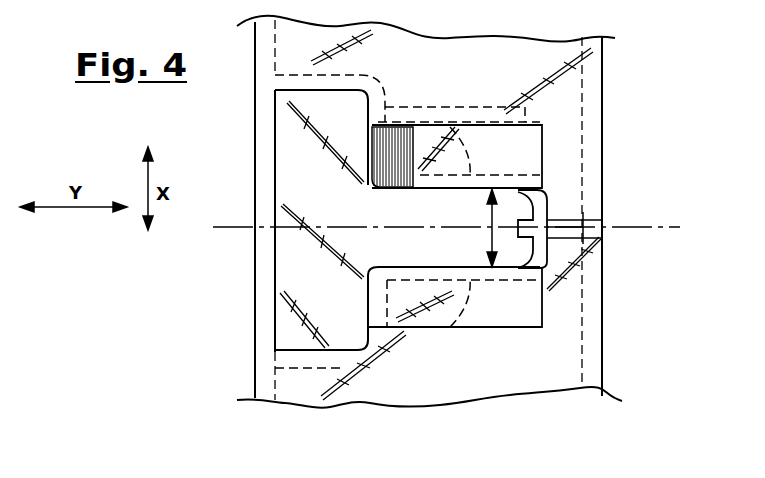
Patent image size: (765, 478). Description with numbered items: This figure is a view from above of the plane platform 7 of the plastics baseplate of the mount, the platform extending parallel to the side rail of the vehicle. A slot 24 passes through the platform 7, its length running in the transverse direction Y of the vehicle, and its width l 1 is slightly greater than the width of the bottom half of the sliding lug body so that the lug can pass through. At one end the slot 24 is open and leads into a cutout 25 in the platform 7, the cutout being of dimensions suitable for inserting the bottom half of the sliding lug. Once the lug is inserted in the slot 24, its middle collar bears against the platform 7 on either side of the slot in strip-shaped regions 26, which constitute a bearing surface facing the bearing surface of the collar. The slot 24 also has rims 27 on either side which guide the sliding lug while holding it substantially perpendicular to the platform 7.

The width 1 is at (484, 228).
The plane platform 7 is at (528, 360).
The slot 24 is at (457, 248).
The cutout 25 is at (350, 183).
The strip-shaped regions 26 is at (515, 148).
The rims 27 is at (443, 114).